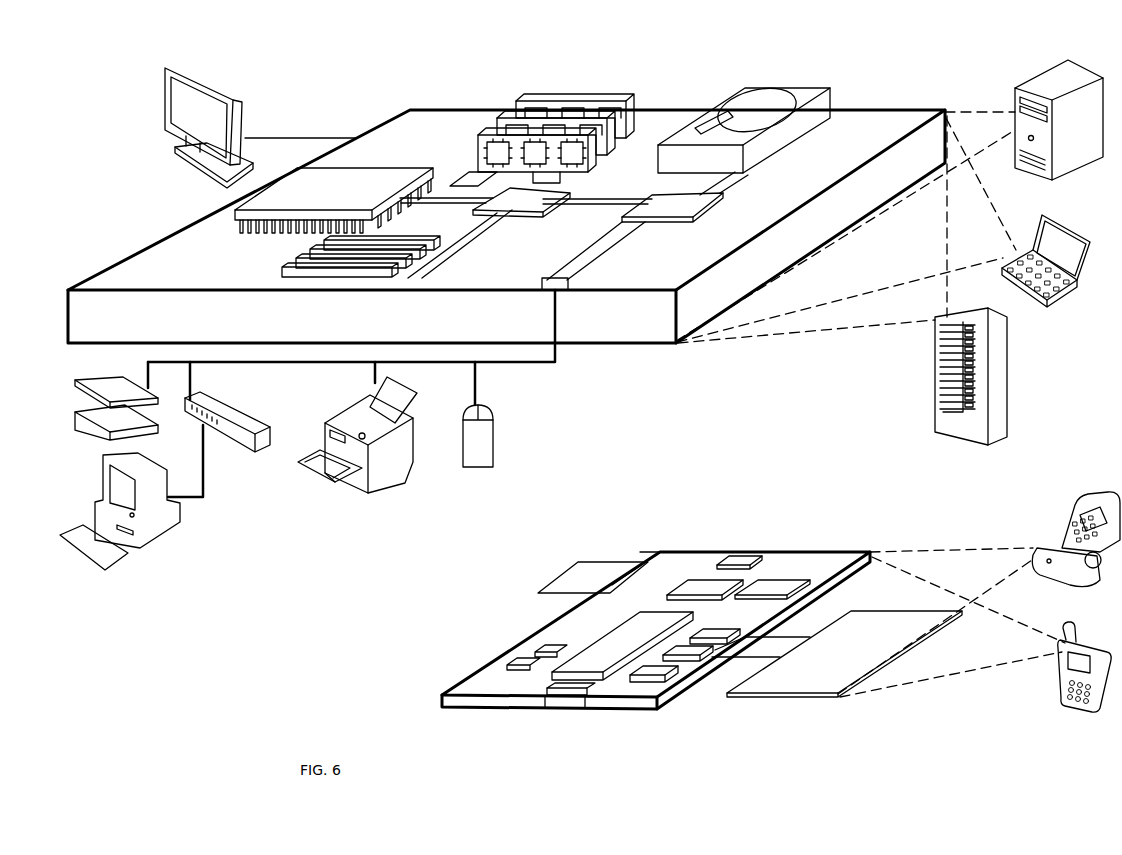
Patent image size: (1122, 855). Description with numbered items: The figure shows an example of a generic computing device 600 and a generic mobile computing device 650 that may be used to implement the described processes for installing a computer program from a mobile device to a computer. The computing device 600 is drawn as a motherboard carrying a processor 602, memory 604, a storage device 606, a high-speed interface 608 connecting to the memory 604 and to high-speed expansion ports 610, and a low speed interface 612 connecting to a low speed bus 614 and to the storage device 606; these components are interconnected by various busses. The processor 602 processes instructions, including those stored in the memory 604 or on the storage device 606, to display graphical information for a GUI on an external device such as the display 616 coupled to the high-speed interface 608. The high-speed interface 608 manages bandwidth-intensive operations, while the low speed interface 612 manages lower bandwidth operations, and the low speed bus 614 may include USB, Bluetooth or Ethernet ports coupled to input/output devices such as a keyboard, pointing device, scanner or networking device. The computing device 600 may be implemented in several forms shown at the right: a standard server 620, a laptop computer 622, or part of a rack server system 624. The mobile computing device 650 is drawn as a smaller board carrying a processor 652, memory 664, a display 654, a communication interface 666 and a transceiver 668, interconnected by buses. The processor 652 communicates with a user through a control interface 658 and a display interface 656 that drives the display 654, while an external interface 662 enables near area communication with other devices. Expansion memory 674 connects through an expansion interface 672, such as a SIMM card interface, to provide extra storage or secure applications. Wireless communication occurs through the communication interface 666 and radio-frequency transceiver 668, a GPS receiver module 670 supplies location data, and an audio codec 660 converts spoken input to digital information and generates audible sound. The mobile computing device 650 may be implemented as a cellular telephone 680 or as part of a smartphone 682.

The computing device 600 is at (348, 82).
The processor 602 is at (210, 215).
The memory 604 is at (528, 100).
The storage device 606 is at (740, 90).
The high-speed interface 608 is at (503, 194).
The high-speed expansion ports 610 is at (308, 256).
The low speed interface 612 is at (670, 200).
The low speed bus 614 is at (568, 288).
The display 616 is at (164, 70).
The standard server 620 is at (1015, 95).
The laptop computer 622 is at (1037, 220).
The rack server system 624 is at (935, 398).
The mobile computing device 650 is at (636, 526).
The processor 652 is at (580, 680).
The display 654 is at (838, 697).
The display interface 656 is at (672, 678).
The control interface 658 is at (705, 661).
The audio codec 660 is at (712, 641).
The external interface 662 is at (567, 695).
The memory 664 is at (518, 665).
The communication interface 666 is at (703, 585).
The transceiver 668 is at (772, 584).
The GPS receiver module 670 is at (745, 561).
The expansion interface 672 is at (635, 561).
The expansion memory 674 is at (577, 563).
The cellular telephone 680 is at (1083, 500).
The smartphone 682 is at (1066, 623).